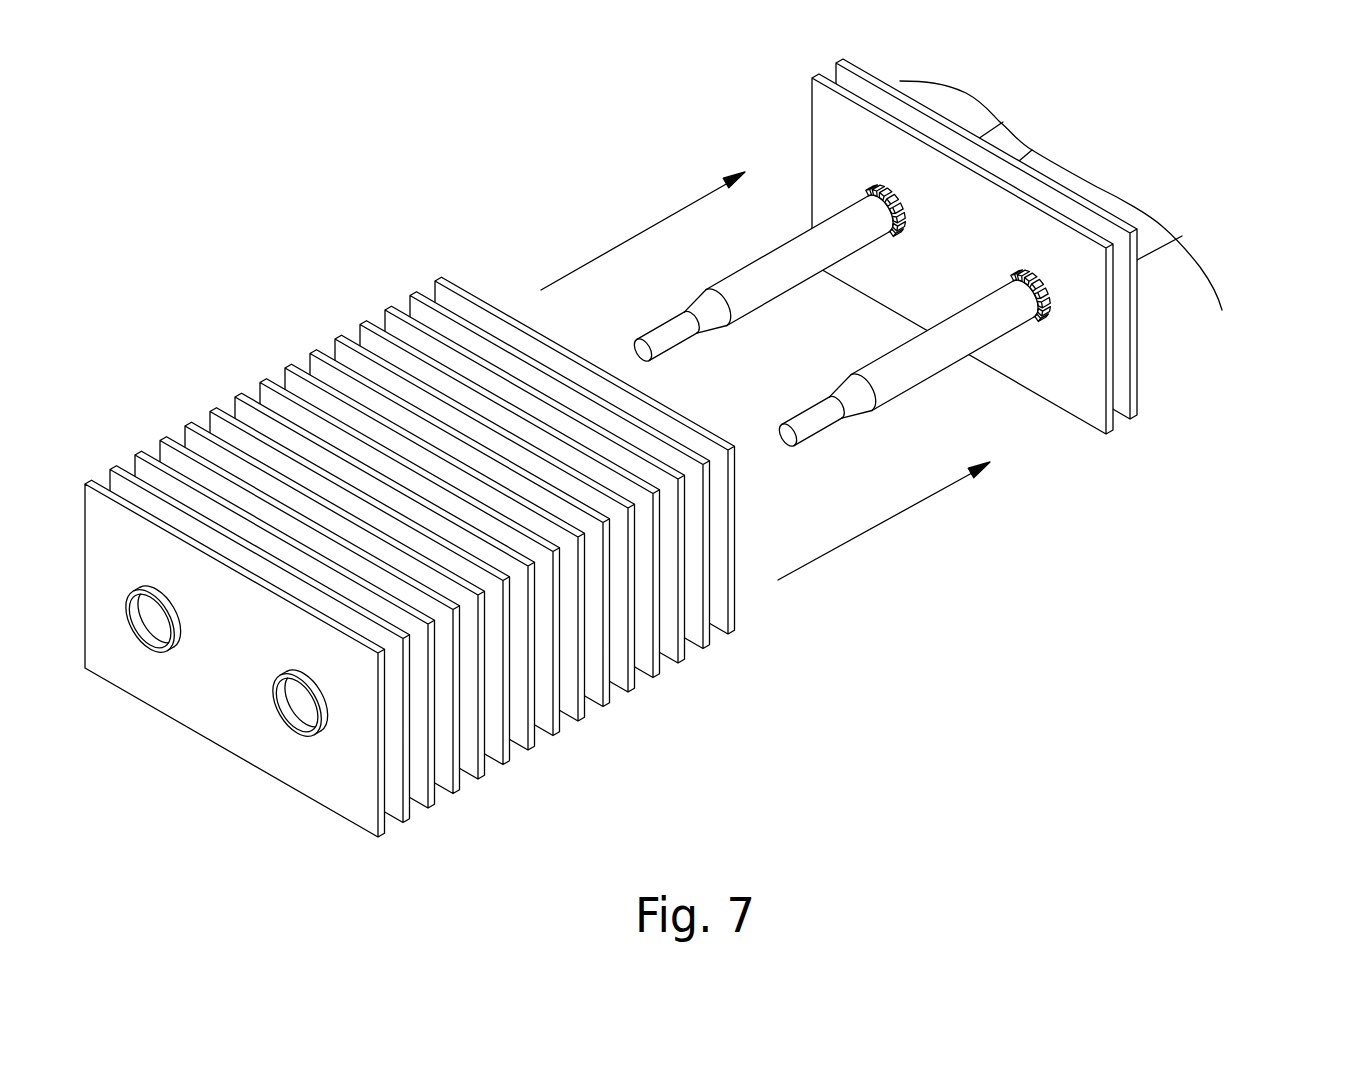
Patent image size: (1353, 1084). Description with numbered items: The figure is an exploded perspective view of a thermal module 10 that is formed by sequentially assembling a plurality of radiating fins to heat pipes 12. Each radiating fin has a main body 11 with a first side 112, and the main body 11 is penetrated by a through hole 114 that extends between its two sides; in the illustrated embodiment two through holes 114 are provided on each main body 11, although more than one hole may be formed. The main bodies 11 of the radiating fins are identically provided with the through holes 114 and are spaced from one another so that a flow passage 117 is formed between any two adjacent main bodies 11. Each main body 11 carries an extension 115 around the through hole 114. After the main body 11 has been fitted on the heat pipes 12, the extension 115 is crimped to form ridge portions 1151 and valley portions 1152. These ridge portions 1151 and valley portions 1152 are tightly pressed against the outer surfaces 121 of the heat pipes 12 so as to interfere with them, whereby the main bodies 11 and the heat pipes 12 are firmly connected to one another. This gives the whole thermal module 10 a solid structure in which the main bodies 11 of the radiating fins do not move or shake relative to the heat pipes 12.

The thermal module 10 is at (379, 243).
The main body 11 is at (784, 84).
The heat pipe 12 is at (944, 332).
The first side 112 is at (707, 472).
The through hole 114 is at (300, 707).
The extension 115 is at (723, 590).
The flow passage 117 is at (1118, 422).
The outer surface 121 is at (897, 385).
The ridge portion 1151 is at (1050, 285).
The valley portion 1152 is at (1048, 298).